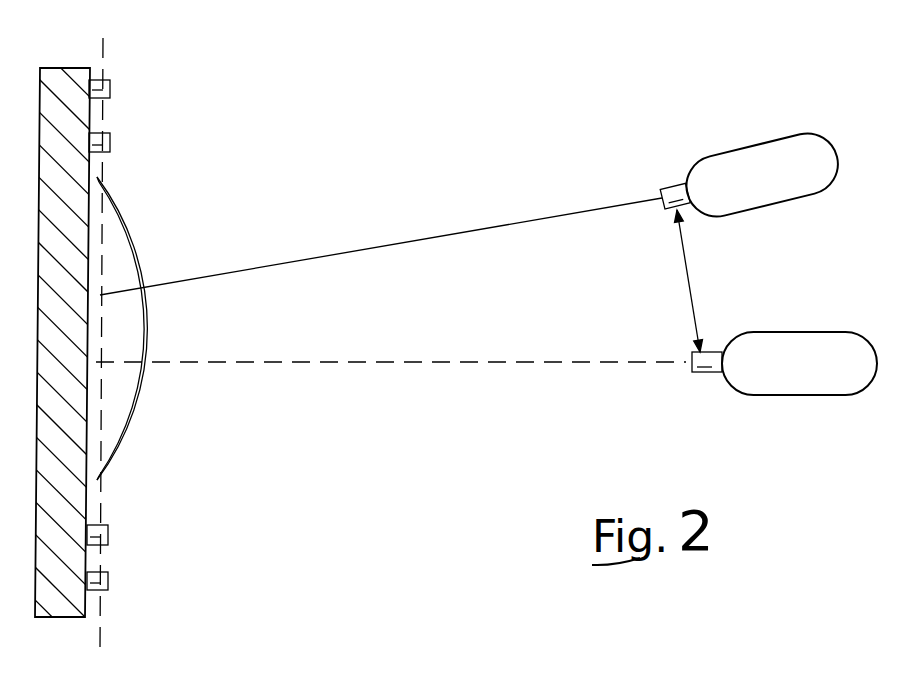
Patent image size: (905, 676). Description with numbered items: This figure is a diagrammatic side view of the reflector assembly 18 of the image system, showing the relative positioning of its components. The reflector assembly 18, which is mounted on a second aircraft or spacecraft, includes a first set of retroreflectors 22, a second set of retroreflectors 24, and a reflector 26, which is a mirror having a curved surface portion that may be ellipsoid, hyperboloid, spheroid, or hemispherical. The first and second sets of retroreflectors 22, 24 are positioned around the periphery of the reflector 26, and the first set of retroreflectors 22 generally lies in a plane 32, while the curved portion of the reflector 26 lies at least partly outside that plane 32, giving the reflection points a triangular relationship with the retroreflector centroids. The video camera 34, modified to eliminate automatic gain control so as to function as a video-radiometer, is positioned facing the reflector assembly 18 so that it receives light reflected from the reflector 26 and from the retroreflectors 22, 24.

The reflector assembly 18 is at (95, 65).
The first set of retroreflectors 22 is at (108, 532).
The second set of retroreflectors 24 is at (108, 582).
The reflector 26 is at (148, 232).
The plane 32 is at (100, 638).
The video camera 34 is at (740, 153).